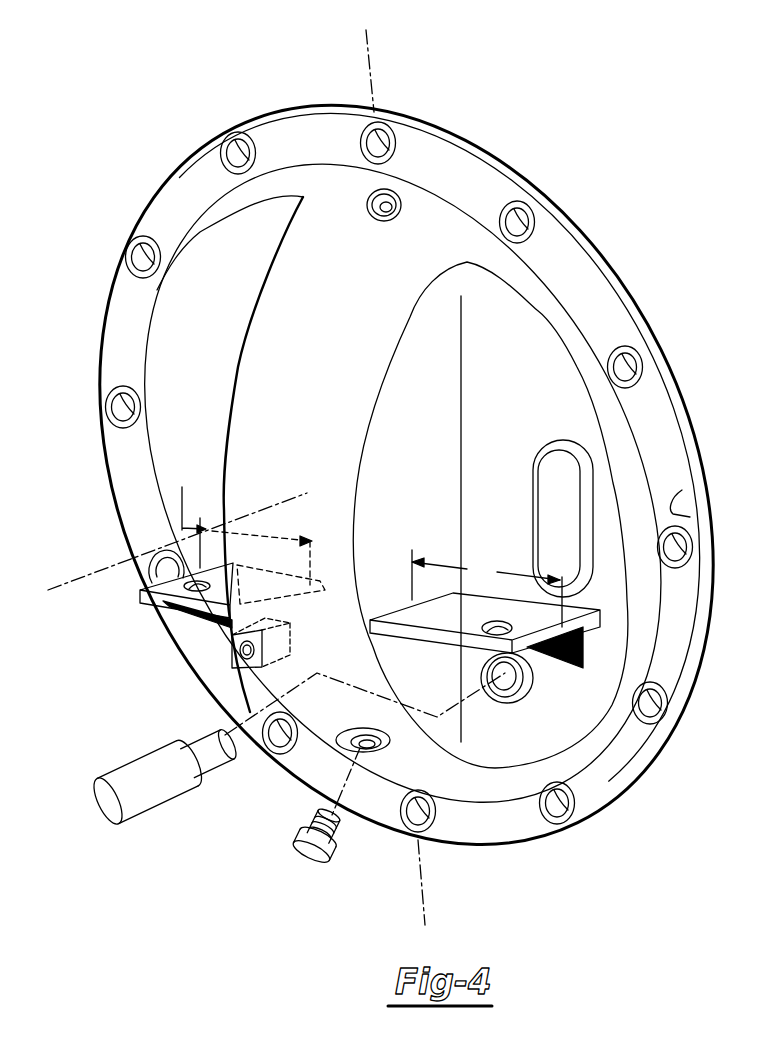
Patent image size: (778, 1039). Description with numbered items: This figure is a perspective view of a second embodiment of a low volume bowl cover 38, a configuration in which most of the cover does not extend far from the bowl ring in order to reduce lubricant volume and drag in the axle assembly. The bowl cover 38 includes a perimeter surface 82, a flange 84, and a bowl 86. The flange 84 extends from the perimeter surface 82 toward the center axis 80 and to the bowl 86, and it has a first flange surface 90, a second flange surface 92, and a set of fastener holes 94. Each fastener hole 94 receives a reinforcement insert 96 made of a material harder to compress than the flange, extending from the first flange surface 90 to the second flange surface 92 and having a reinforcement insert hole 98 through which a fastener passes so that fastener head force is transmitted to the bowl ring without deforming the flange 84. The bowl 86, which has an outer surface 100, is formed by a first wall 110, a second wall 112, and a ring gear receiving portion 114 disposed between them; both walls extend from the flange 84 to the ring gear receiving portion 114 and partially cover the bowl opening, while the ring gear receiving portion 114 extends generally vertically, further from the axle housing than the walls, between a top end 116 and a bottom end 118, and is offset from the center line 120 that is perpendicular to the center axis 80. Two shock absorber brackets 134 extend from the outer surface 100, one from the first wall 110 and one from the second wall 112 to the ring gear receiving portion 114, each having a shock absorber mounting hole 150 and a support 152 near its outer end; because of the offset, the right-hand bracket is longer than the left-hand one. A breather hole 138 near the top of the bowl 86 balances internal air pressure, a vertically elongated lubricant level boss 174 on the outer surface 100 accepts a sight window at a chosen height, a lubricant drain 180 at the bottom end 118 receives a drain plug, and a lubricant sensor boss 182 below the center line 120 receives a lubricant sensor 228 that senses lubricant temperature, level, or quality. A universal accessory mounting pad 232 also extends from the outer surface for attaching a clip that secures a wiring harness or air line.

The bowl cover 38 is at (228, 130).
The center axis 80 is at (74, 584).
The perimeter surface 82 is at (670, 405).
The flange 84 is at (688, 516).
The bowl 86 is at (548, 501).
The first flange surface 90 is at (493, 162).
The second flange surface 92 is at (465, 168).
The fastener hole 94 is at (578, 800).
The reinforcement insert 96 is at (568, 820).
The reinforcement insert hole 98 is at (110, 402).
The outer surface 100 is at (447, 243).
The first wall 110 is at (200, 298).
The second wall 112 is at (567, 715).
The ring gear receiving portion 114 is at (300, 367).
The top end 116 is at (327, 203).
The bottom end 118 is at (390, 770).
The center line 120 is at (373, 79).
The shock absorber bracket 134 is at (420, 576).
The breather hole 138 is at (383, 216).
The shock absorber mounting hole 150 is at (190, 596).
The support 152 is at (213, 620).
The lubricant level boss 174 is at (573, 528).
The lubricant drain 180 is at (353, 757).
The lubricant sensor boss 182 is at (497, 688).
The lubricant sensor 228 is at (167, 788).
The universal accessory mounting pad 232 is at (230, 657).